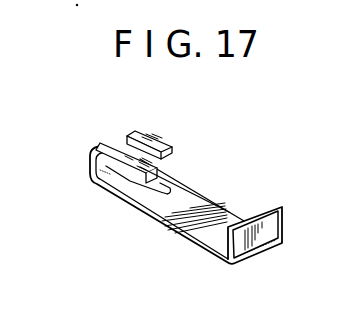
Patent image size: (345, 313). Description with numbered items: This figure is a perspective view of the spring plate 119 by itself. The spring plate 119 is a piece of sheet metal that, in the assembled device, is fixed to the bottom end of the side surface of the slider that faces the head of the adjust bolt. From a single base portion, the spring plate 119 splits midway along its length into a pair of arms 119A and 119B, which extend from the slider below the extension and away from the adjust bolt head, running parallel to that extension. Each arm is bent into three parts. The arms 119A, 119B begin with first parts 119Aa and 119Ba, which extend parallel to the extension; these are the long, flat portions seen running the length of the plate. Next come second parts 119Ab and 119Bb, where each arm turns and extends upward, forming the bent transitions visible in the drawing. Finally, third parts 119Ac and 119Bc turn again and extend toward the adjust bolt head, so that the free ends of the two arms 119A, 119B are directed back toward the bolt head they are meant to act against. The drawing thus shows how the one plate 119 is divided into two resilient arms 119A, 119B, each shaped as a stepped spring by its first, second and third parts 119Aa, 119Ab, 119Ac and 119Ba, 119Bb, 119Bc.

The spring plate 119 is at (205, 208).
The arm 119A is at (166, 124).
The first part 119Aa is at (187, 182).
The second part 119Ab is at (126, 138).
The third part 119Ac is at (171, 144).
The arm 119B is at (113, 148).
The first part 119Ba is at (117, 198).
The second part 119Bb is at (93, 167).
The third part 119Bc is at (120, 147).